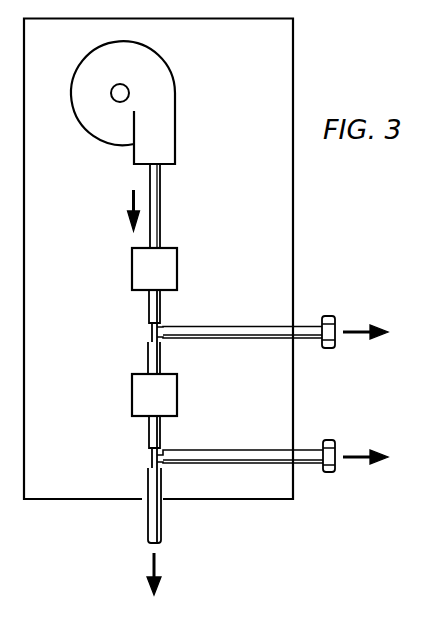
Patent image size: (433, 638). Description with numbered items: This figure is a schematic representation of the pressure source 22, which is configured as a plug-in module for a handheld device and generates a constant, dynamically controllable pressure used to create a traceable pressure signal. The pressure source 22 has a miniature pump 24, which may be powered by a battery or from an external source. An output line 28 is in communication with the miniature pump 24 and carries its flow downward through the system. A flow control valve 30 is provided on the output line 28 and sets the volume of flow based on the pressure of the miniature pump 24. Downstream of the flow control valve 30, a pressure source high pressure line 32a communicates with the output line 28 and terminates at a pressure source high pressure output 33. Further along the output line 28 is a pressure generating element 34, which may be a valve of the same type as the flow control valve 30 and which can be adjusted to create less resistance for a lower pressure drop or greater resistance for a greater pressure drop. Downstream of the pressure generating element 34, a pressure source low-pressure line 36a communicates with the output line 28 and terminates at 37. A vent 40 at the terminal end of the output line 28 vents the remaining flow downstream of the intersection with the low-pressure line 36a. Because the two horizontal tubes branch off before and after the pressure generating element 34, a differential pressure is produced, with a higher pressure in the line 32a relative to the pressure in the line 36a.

The pressure source 22 is at (277, 63).
The miniature pump 24 is at (175, 128).
The output line 28 is at (160, 205).
The flow control valve 30 is at (132, 270).
The pressure source high pressure line 32a is at (240, 326).
The pressure source high pressure output 33 is at (329, 316).
The pressure generating element 34 is at (132, 395).
The pressure source low-pressure line 36a is at (240, 450).
The low-pressure line terminus 37 is at (332, 472).
The vent 40 is at (148, 520).